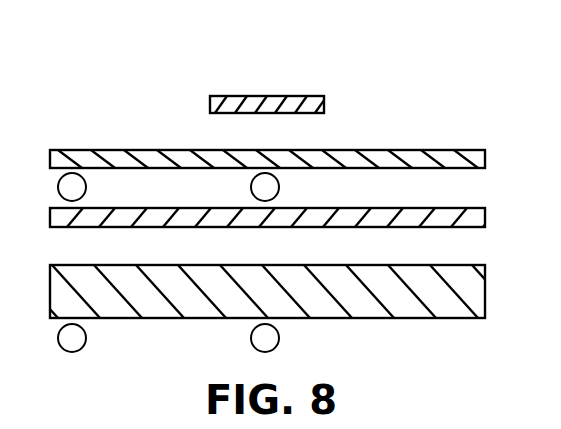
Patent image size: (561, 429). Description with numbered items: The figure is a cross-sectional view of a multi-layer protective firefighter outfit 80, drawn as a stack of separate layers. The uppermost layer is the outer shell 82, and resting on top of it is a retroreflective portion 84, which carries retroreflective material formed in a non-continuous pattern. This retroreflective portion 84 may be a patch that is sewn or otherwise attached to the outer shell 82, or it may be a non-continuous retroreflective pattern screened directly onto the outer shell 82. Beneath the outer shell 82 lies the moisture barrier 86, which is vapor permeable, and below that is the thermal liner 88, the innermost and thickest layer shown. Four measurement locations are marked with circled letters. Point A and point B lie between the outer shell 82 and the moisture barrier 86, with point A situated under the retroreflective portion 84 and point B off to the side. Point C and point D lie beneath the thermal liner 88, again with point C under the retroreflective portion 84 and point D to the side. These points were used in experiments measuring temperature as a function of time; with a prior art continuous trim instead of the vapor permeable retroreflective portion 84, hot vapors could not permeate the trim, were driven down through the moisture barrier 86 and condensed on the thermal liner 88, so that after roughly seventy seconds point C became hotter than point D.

The firefighter outfit 80 is at (143, 64).
The outer shell 82 is at (485, 162).
The retroreflective portion 84 is at (324, 105).
The moisture barrier 86 is at (485, 220).
The thermal liner 88 is at (485, 300).
The point A is at (265, 187).
The point B is at (72, 187).
The point C is at (265, 338).
The point D is at (72, 338).